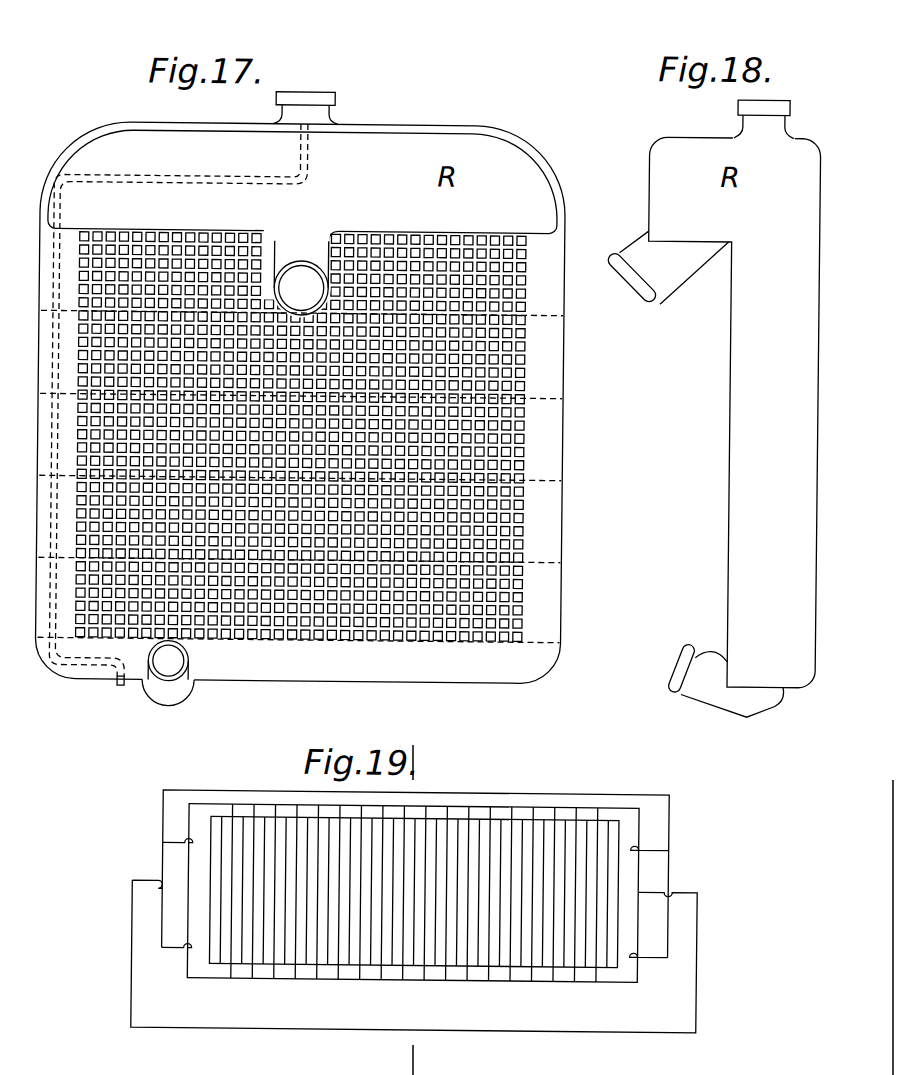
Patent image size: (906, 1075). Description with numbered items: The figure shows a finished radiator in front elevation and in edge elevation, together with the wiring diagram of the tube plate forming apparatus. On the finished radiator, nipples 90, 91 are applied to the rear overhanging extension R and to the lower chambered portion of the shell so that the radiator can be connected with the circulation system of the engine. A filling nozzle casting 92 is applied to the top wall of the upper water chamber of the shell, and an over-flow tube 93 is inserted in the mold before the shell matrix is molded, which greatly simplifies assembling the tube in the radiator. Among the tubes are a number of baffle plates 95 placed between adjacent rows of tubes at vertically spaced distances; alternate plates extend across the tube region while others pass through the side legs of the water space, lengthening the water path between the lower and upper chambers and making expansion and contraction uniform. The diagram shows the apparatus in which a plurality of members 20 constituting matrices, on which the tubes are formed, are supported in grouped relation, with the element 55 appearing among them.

In FIG. 17, the nipple 90 is at (299, 246).
In FIG. 18, the nipple 90 is at (672, 277).
In FIG. 17, the nipple 91 is at (188, 690).
In FIG. 18, the nipple 91 is at (722, 662).
In FIG. 17, the filling nozzle casting 92 is at (332, 100).
In FIG. 18, the filling nozzle casting 92 is at (747, 108).
In FIG. 17, the over-flow tube 93 is at (123, 687).
In FIG. 17, the baffle plates 95 is at (518, 556).
In FIG. 19, the radiator tubes 55 is at (293, 827).
In FIG. 19, the members constituting matrices 20 is at (253, 953).